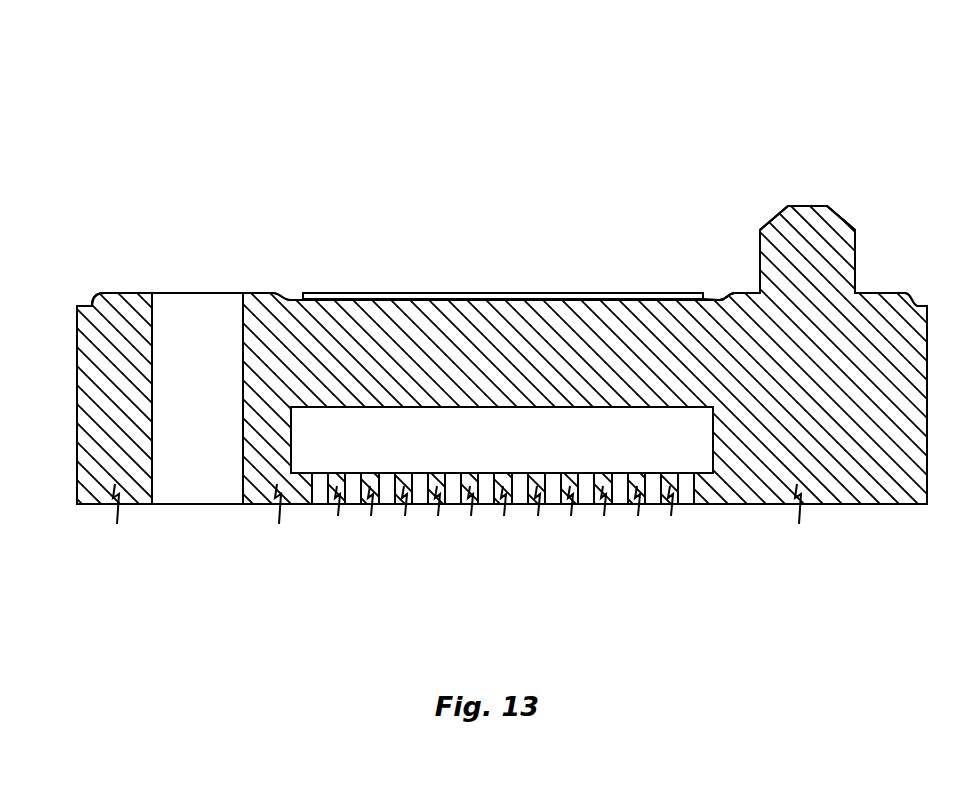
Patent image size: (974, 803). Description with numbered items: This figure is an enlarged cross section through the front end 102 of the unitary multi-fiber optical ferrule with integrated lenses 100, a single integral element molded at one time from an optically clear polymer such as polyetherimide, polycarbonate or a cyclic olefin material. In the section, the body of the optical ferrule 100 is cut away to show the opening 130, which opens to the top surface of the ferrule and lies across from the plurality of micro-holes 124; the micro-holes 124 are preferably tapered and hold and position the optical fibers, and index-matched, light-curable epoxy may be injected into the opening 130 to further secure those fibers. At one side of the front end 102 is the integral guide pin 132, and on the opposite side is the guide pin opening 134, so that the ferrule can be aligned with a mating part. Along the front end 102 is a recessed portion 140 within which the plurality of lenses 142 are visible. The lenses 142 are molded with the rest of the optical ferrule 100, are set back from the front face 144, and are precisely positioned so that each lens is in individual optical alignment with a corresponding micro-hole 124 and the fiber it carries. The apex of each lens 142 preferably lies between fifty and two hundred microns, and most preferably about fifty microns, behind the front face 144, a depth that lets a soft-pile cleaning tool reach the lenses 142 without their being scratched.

The unitary multi-fiber optical ferrule with integrated lenses 100 is at (910, 110).
The front end 102 is at (870, 293).
The micro-holes 124 is at (488, 497).
The opening 130 is at (685, 457).
The integral guide pin 132 is at (801, 206).
The guide pin opening 134 is at (208, 320).
The recessed portion 140 is at (712, 300).
The lenses 142 is at (587, 293).
The front face 144 is at (130, 293).